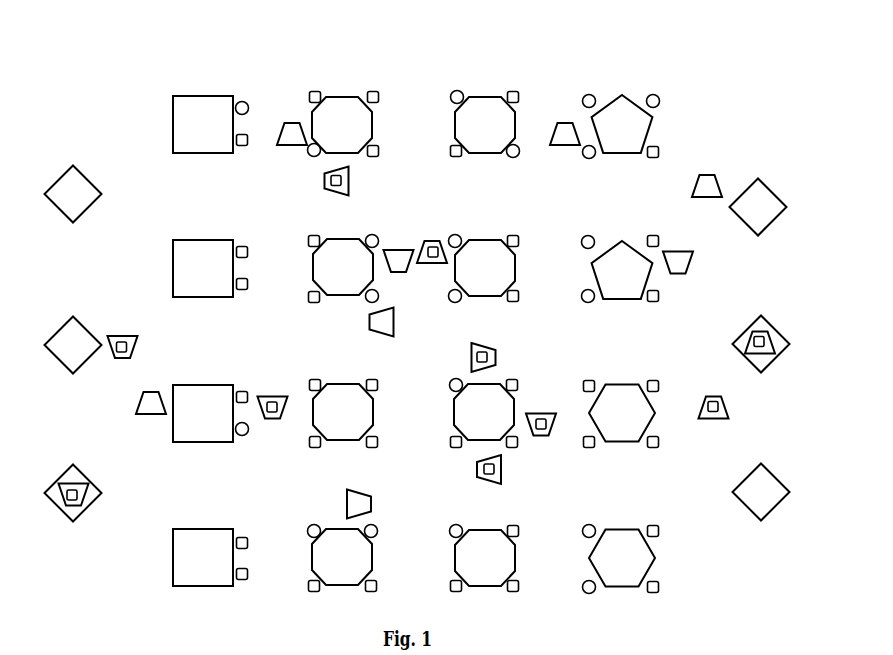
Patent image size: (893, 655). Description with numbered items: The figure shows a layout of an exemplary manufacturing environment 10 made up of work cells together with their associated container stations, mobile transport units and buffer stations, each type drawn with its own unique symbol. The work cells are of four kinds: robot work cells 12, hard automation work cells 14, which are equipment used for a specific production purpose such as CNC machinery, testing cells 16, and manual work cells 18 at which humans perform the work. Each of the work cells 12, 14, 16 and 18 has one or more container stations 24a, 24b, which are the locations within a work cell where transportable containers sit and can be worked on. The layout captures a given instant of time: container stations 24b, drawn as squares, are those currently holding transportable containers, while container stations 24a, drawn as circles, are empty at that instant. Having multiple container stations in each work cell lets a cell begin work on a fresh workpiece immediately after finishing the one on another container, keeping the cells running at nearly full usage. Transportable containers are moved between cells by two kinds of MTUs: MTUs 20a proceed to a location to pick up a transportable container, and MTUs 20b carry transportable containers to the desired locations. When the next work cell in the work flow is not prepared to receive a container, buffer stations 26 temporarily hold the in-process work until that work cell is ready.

The manufacturing environment 10 is at (430, 32).
The robot work cell 12 is at (347, 90).
The hard automation work cell 14 is at (613, 93).
The testing cell 16 is at (655, 377).
The manual work cell 18 is at (207, 90).
The MTU 20a is at (722, 178).
The MTU 20b is at (733, 408).
The container station 24a is at (665, 93).
The container station 24b is at (665, 142).
The buffer station 26 is at (89, 173).